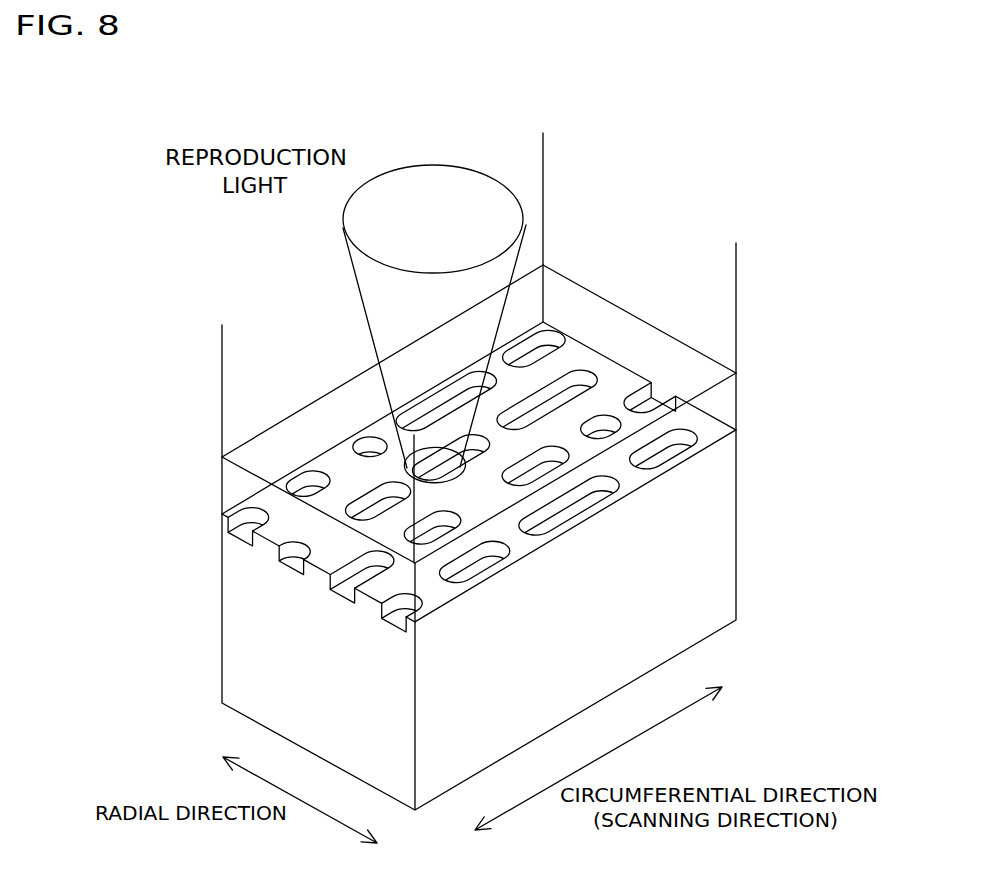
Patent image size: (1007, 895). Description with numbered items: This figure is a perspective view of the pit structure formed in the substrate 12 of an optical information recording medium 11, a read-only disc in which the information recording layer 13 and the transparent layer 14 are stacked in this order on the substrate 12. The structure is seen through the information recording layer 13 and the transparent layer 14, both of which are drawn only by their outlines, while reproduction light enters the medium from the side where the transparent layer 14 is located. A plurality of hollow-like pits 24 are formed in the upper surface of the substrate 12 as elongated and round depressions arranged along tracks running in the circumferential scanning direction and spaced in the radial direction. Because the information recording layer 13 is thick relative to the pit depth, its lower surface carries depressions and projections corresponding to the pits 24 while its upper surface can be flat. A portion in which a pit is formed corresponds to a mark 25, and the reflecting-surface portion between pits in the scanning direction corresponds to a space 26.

The optical information recording medium 11 is at (753, 147).
The substrate 12 is at (725, 538).
The information recording layer 13 is at (722, 400).
The transparent layer 14 is at (738, 305).
The pit 24 is at (298, 473).
The mark 25 is at (370, 513).
The space 26 is at (332, 535).